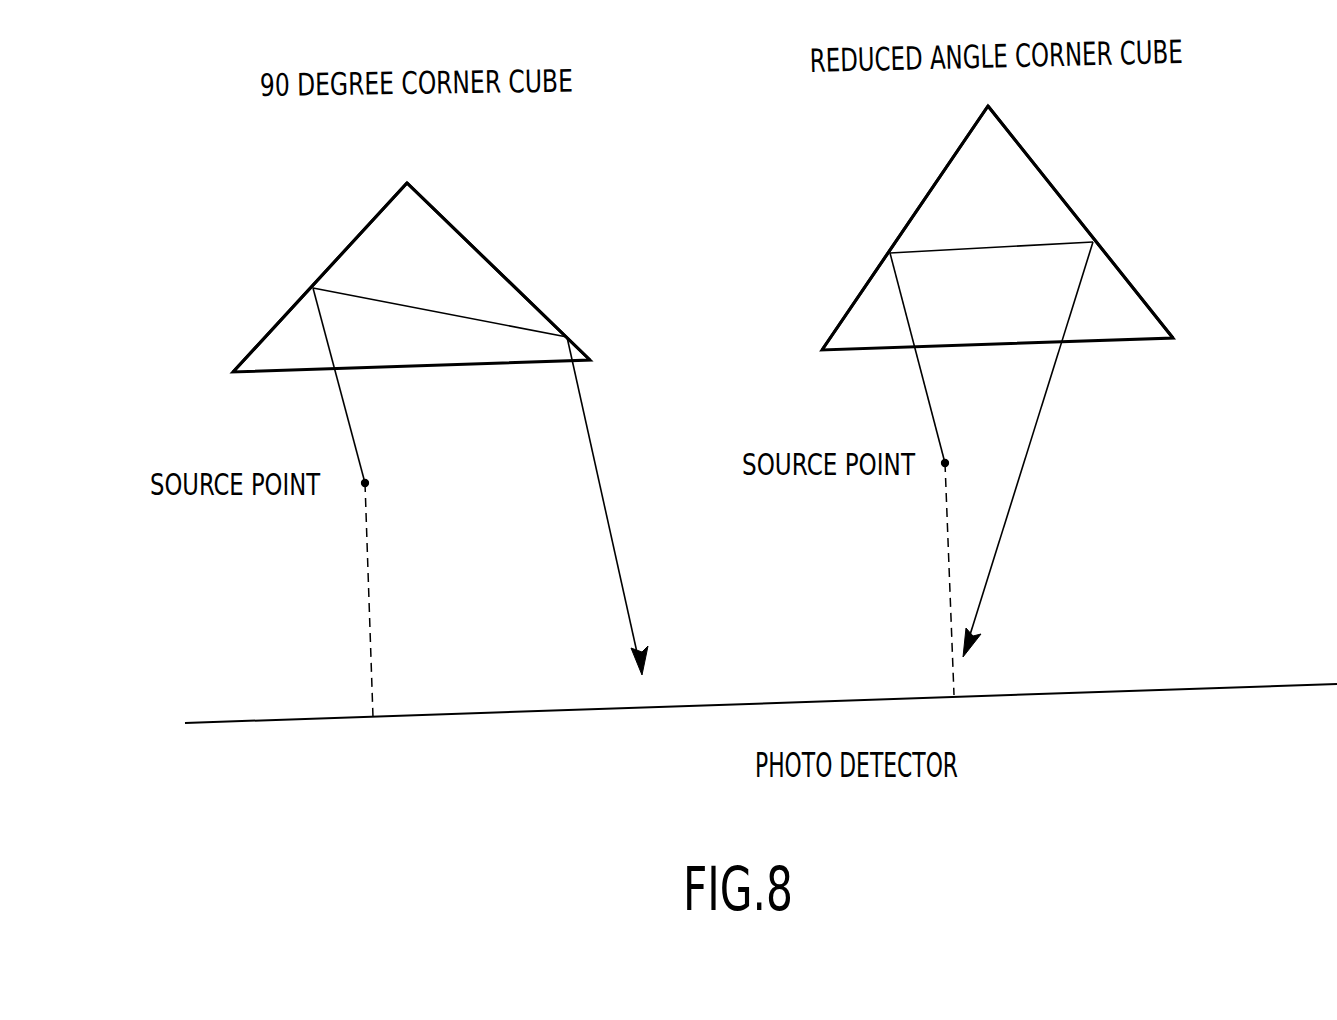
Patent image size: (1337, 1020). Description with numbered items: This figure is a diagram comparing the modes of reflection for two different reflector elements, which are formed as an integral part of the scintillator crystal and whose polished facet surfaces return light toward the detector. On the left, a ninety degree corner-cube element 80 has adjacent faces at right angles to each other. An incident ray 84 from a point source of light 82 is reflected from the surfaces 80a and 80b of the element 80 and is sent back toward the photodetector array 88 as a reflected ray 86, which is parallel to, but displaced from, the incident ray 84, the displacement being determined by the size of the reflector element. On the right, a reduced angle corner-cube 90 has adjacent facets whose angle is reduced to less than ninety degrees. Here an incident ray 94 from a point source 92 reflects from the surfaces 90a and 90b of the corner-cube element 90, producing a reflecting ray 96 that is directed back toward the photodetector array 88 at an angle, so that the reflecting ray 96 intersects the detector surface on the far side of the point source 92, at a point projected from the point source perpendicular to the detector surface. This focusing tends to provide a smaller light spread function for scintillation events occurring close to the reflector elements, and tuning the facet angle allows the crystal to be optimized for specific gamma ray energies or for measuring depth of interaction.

The 90° corner-cube element 80 is at (343, 253).
The surface 80a is at (283, 320).
The surface 80b is at (587, 342).
The point source of light 82 is at (365, 483).
The incident ray 84 is at (347, 425).
The reflected ray 86 is at (595, 463).
The photodetector array 88 is at (478, 715).
The reduced angle corner-cube 90 is at (933, 188).
The surface 90a is at (858, 297).
The surface 90b is at (1147, 302).
The point source 92 is at (945, 463).
The incident ray 94 is at (927, 400).
The reflecting ray 96 is at (1047, 393).